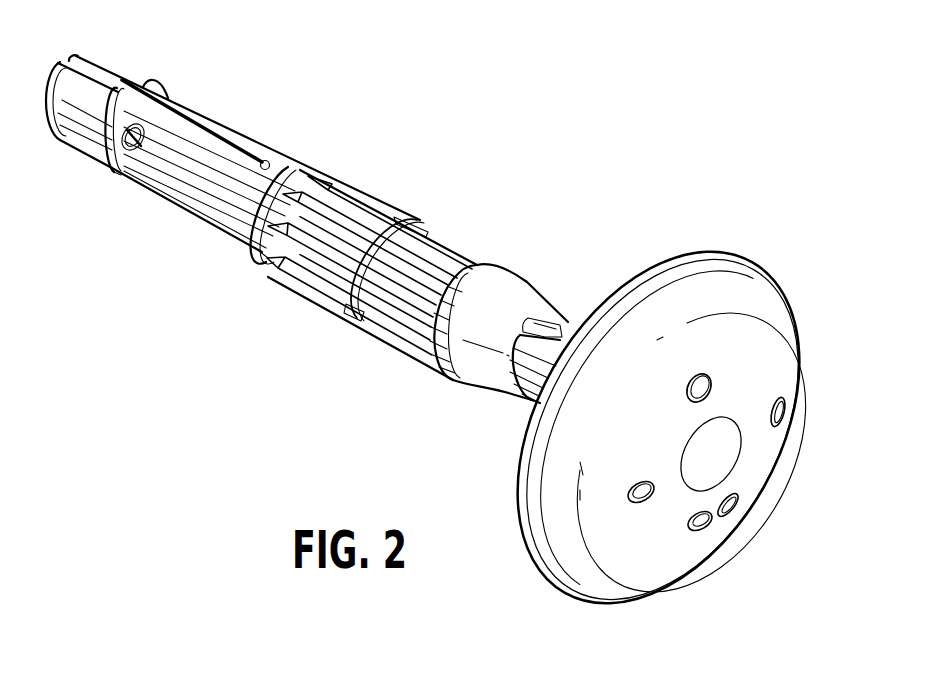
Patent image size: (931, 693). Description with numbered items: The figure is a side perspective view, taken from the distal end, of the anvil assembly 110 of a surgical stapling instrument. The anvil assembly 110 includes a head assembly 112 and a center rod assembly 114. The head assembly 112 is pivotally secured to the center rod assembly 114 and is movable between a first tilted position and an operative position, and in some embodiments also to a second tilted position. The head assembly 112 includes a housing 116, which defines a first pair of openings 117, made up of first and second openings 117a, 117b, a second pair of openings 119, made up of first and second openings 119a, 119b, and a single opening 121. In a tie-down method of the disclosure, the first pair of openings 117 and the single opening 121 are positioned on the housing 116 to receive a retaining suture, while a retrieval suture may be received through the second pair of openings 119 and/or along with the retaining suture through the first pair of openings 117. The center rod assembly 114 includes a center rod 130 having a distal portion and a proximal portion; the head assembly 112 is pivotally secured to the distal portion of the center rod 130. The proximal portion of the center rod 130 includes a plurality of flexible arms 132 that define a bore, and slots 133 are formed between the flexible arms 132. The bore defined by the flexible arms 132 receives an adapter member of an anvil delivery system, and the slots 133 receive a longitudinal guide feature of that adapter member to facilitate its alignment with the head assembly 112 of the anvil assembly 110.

The anvil assembly 110 is at (513, 140).
The head assembly 112 is at (729, 249).
The center rod assembly 114 is at (379, 186).
The housing 116 is at (613, 605).
The first pair of openings 117 is at (740, 498).
The first opening 117a is at (700, 530).
The second opening 117b is at (733, 506).
The second pair of openings 119 is at (794, 395).
The first opening 119a is at (629, 505).
The second opening 119b is at (781, 400).
The single opening 121 is at (696, 380).
The center rod 130 is at (317, 270).
The flexible arms 132 is at (163, 84).
The slots 133 is at (124, 81).